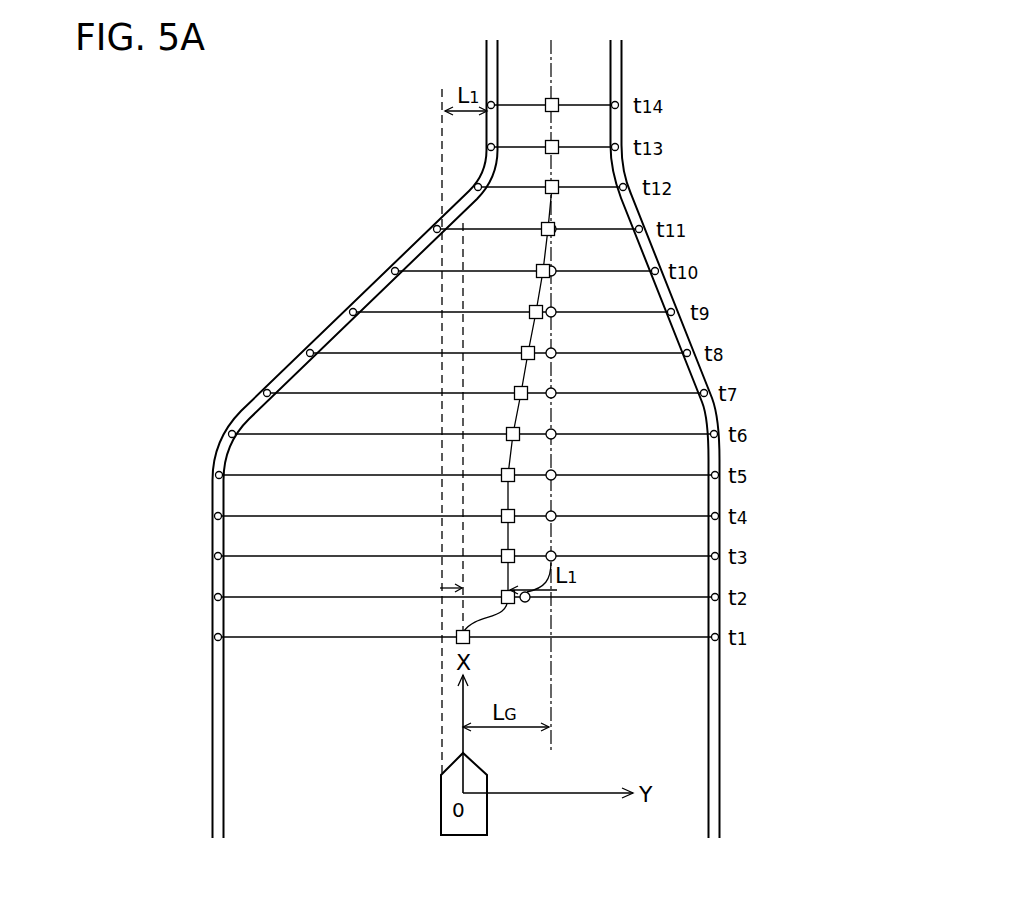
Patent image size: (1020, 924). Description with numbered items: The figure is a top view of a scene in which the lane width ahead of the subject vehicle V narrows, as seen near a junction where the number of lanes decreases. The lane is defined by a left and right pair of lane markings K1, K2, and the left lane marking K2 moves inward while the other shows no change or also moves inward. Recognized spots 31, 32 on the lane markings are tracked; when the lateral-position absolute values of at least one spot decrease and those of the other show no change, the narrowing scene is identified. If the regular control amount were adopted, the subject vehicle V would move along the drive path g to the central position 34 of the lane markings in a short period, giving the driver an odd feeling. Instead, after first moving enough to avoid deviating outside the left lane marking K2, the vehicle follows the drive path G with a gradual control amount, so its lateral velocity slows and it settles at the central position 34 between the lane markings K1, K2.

The recognized spot 31 is at (718, 641).
The recognized spot 32 is at (213, 637).
The central position of lane markings 34 is at (557, 471).
The lane marking K1 is at (712, 767).
The lane marking K2 is at (214, 768).
The drive path G is at (509, 535).
The drive path g is at (552, 492).
The subject vehicle V is at (478, 829).